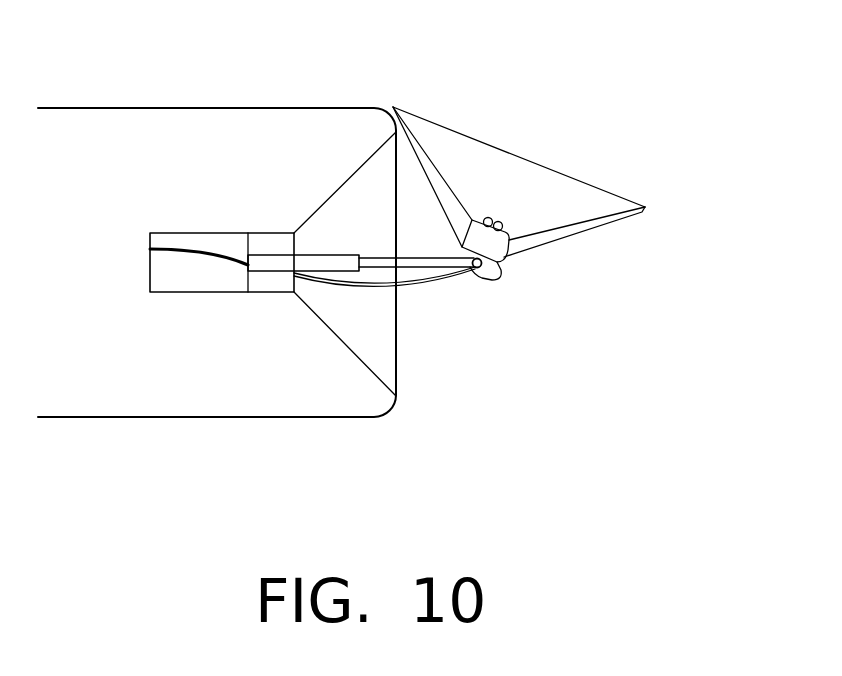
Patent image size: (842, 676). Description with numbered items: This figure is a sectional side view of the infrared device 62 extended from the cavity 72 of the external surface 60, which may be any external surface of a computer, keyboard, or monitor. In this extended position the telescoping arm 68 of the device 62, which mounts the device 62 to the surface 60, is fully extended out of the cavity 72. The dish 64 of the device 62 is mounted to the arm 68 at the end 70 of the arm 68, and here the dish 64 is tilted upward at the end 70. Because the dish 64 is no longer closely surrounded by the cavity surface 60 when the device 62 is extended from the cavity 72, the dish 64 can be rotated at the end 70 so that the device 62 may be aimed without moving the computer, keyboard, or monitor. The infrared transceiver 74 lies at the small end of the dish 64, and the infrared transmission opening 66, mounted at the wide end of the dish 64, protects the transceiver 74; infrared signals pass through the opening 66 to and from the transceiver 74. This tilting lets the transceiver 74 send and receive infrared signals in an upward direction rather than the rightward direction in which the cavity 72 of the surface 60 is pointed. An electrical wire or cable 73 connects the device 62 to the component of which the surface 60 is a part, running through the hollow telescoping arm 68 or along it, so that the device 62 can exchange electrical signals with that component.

The external surface 60 is at (397, 367).
The infrared device 62 is at (578, 289).
The dish 64 is at (521, 243).
The infrared transmission opening 66 is at (553, 172).
The telescoping arm 68 is at (294, 261).
The end of arm 70 is at (474, 269).
The cavity 72 is at (356, 303).
The electrical wire or cable 73 is at (386, 285).
The infrared transceiver 74 is at (482, 236).